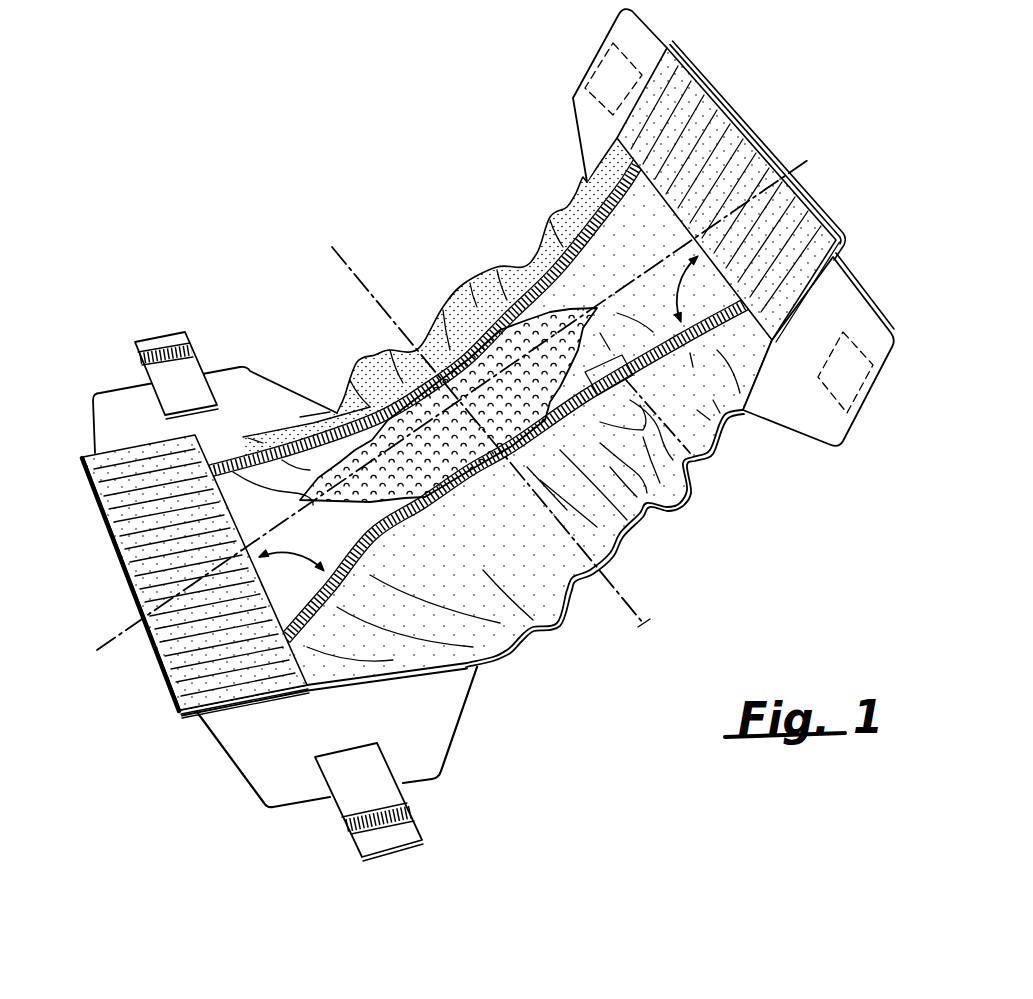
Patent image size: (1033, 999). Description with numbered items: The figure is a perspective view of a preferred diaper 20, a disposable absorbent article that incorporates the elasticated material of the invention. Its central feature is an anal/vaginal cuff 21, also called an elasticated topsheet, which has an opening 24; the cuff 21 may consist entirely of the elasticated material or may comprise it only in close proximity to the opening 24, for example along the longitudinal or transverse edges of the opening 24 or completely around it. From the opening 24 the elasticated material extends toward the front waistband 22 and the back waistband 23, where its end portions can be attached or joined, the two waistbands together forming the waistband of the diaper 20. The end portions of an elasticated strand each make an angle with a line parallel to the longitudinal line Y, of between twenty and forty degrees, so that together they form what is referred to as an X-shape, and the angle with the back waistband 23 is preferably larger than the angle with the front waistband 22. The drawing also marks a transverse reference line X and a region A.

The diaper 20 is at (270, 277).
The cuff 21 is at (660, 503).
The front waistband 22 is at (702, 118).
The back waistband 23 is at (137, 553).
The opening 24 is at (400, 431).
The section line A is at (693, 455).
The lateral axis X is at (643, 620).
The line Y is at (807, 163).